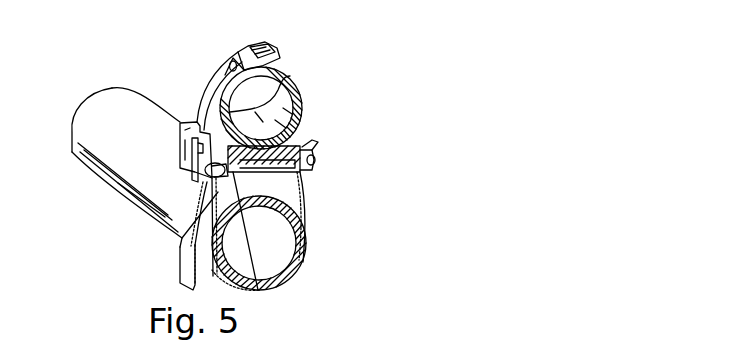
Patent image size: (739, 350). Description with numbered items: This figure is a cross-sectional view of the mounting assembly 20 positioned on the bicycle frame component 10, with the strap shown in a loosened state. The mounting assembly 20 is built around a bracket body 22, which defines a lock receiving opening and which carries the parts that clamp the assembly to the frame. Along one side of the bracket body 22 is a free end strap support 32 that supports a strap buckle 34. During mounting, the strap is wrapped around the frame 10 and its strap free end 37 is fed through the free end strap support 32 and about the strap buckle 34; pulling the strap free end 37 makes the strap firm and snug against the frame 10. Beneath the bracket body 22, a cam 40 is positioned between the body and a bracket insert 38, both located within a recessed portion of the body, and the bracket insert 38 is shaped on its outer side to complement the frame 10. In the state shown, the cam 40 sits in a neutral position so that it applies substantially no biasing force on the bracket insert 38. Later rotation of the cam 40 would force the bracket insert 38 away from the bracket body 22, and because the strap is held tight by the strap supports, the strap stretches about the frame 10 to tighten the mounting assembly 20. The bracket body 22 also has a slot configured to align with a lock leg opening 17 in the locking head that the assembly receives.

The bicycle frame component 10 is at (105, 100).
The lock leg opening 17 is at (197, 128).
The mounting assembly 20 is at (230, 60).
The bracket body 22 is at (298, 88).
The free end strap support 32 is at (187, 162).
The strap buckle 34 is at (257, 287).
The strap free end 37 is at (182, 260).
The bracket insert 38 is at (312, 182).
The cam 40 is at (285, 190).